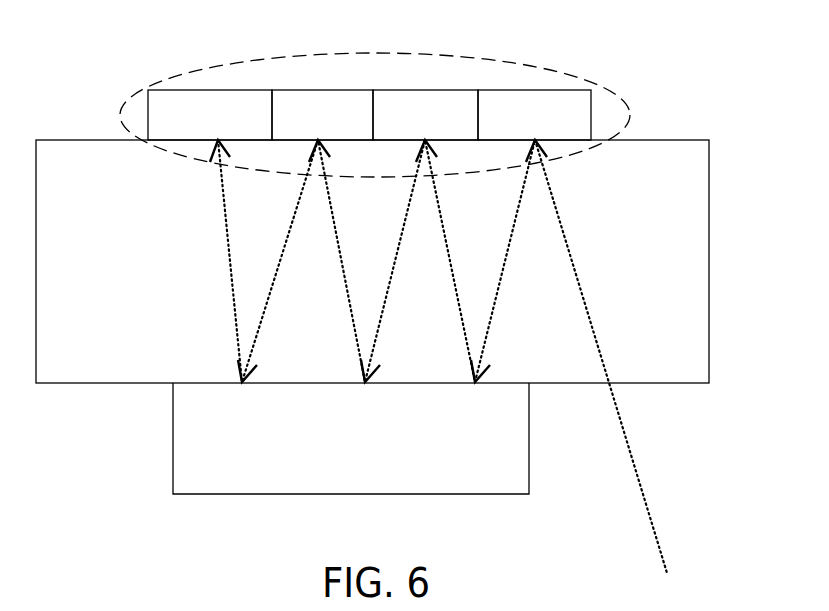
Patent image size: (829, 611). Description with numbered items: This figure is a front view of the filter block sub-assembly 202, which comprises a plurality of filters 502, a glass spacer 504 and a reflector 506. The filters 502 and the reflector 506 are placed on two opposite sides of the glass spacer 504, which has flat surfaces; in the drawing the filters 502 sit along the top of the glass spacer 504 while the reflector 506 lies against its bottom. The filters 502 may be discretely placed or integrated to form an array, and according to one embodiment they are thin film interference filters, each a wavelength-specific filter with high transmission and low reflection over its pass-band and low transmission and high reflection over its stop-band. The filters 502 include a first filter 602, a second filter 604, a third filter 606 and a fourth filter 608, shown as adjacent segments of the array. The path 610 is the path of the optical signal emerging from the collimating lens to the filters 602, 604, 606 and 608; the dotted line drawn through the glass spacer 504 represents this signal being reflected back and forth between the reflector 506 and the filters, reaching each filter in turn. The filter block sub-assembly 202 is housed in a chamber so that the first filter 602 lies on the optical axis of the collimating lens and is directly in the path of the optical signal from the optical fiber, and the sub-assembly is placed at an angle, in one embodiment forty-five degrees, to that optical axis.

The filter block sub-assembly 202 is at (660, 469).
The filters 502 is at (630, 114).
The glass spacer 504 is at (399, 286).
The reflector 506 is at (529, 437).
The first filter 602 is at (558, 90).
The second filter 604 is at (432, 90).
The third filter 606 is at (323, 90).
The fourth filter 608 is at (213, 90).
The path 610 is at (653, 532).